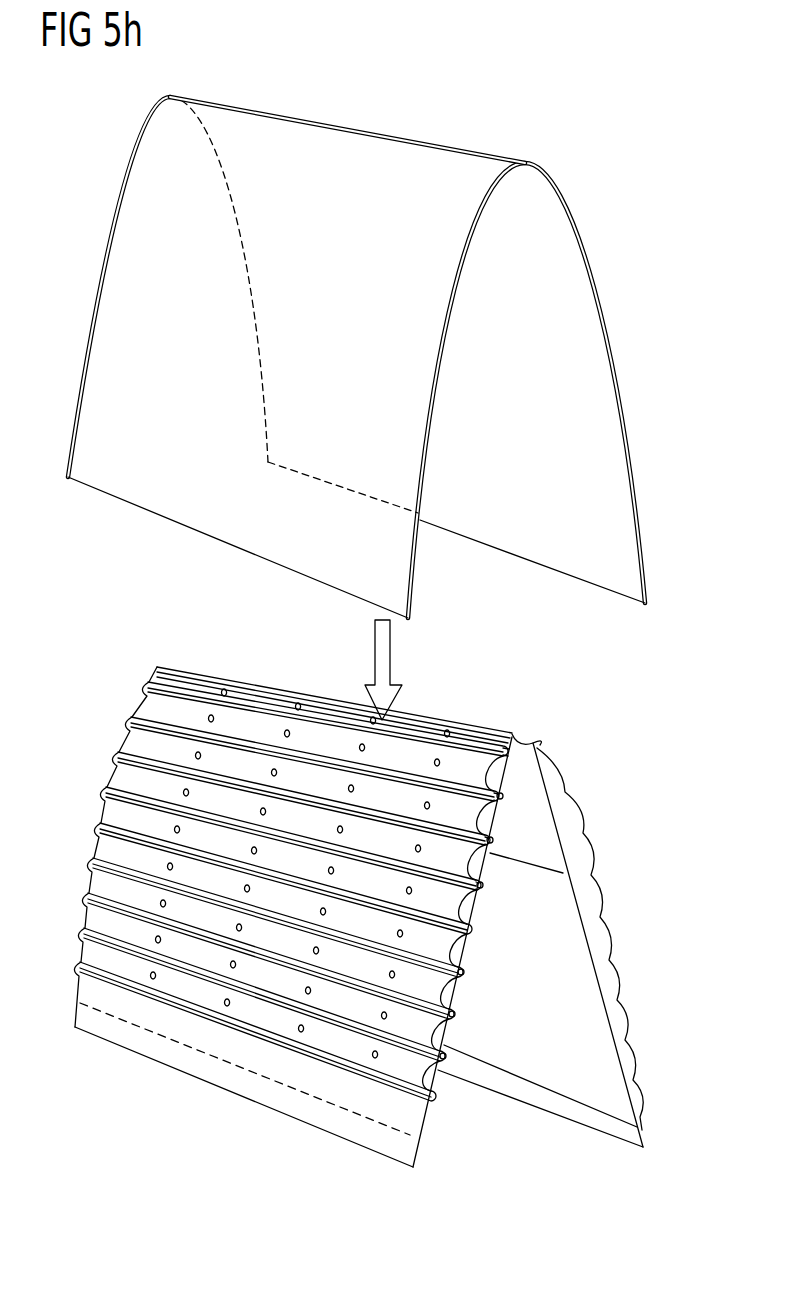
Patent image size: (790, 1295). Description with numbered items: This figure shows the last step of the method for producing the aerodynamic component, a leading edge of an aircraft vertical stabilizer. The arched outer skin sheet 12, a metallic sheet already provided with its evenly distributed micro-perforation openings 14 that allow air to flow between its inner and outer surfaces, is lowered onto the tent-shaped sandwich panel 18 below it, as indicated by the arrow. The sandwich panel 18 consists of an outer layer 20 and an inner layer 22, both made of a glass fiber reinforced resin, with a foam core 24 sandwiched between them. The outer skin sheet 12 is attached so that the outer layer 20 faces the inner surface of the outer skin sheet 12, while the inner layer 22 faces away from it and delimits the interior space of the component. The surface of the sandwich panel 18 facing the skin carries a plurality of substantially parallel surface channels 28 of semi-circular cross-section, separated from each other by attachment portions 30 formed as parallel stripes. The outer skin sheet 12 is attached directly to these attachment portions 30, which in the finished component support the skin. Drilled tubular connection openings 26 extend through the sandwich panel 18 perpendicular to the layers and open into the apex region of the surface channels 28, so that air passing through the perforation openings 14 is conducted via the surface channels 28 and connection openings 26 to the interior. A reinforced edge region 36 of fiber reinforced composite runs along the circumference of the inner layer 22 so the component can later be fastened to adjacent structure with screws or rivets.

The outer skin sheet 12 is at (379, 349).
The perforation openings 14 is at (388, 167).
The sandwich panel 18 is at (362, 928).
The outer layer 20 is at (286, 928).
The inner layer 22 is at (598, 1087).
The foam core 24 is at (559, 958).
The connection openings 26 is at (440, 1033).
The surface channels 28 is at (83, 960).
The attachment portions 30 is at (447, 933).
The reinforced edge region 36 is at (310, 1112).